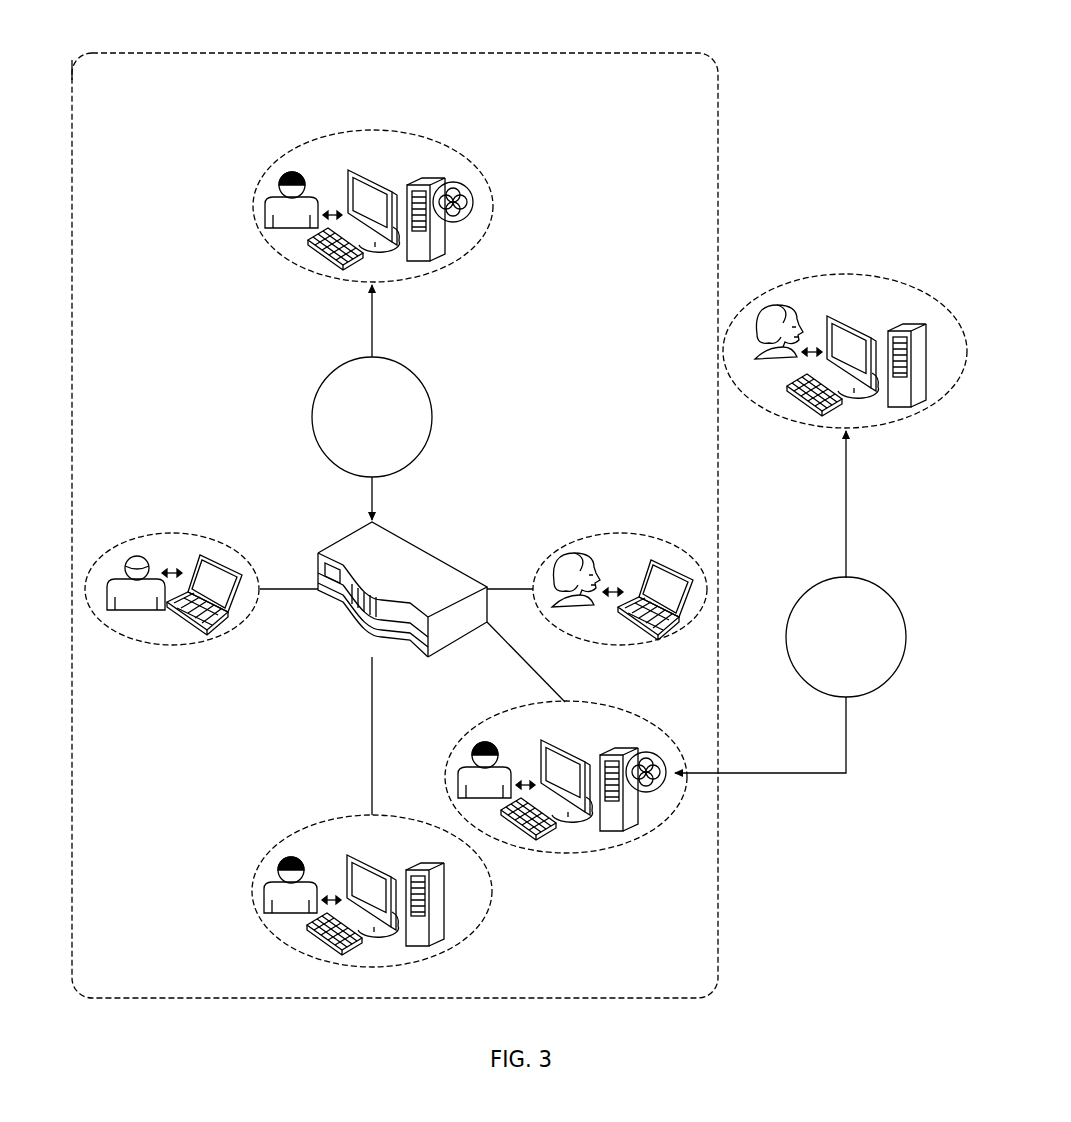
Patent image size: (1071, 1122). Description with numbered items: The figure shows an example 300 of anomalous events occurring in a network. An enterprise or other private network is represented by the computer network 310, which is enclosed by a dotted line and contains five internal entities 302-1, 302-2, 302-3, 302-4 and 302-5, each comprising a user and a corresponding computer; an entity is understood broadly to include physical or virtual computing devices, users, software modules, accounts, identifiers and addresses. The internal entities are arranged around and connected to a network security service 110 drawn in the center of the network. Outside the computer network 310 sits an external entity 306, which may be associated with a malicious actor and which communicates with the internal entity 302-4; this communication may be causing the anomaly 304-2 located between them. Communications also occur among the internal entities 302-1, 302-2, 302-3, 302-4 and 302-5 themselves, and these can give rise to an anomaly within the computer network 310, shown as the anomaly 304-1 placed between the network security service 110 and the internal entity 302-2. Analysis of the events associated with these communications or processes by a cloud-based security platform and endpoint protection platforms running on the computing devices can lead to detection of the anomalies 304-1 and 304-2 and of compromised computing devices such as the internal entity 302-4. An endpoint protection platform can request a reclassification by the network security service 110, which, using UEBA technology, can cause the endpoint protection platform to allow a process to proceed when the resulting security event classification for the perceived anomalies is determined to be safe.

The system 300 is at (126, 37).
The computer network 310 is at (407, 108).
The internal entity 302-1 is at (171, 534).
The internal entity 302-2 is at (247, 204).
The internal entity 302-3 is at (618, 534).
The internal entity 302-4 is at (446, 771).
The internal entity 302-5 is at (250, 886).
The anomaly 304-1 is at (311, 411).
The anomaly 304-2 is at (907, 631).
The external entity 306 is at (848, 273).
The network security service 110 is at (430, 549).